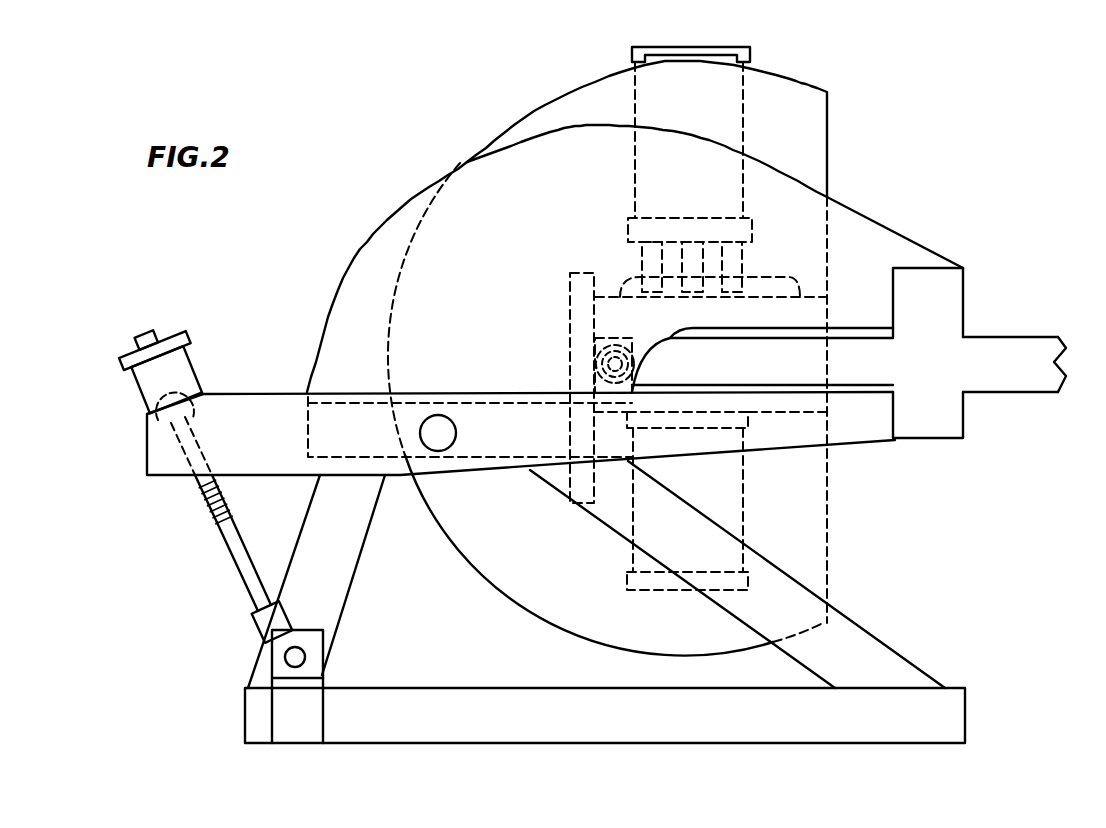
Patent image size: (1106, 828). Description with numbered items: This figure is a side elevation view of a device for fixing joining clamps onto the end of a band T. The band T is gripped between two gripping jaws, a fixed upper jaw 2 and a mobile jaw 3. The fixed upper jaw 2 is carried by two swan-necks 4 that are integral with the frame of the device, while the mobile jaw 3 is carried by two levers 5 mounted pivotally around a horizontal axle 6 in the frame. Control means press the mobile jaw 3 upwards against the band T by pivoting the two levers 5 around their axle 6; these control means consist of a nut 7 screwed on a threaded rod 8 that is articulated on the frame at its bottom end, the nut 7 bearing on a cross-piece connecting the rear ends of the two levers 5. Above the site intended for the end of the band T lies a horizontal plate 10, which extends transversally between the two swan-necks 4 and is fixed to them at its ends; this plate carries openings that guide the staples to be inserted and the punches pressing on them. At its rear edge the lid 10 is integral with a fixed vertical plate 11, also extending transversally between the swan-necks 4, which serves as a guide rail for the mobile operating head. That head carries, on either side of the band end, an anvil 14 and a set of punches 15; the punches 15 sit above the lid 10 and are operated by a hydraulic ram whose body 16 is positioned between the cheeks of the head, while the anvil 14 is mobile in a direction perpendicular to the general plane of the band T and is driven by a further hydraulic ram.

The fixed upper jaw 2 is at (943, 287).
The mobile jaw 3 is at (950, 421).
The swan-necks 4 is at (393, 216).
The levers 5 is at (278, 448).
The horizontal axle 6 is at (443, 440).
The nut 7 is at (150, 378).
The threaded rod 8 is at (203, 498).
The horizontal plate 10 is at (838, 307).
The fixed vertical plate 11 is at (570, 289).
The anvil 14 is at (727, 400).
The set of punches 15 is at (745, 256).
The hydraulic ram body 16 is at (720, 52).
The band T is at (1027, 337).